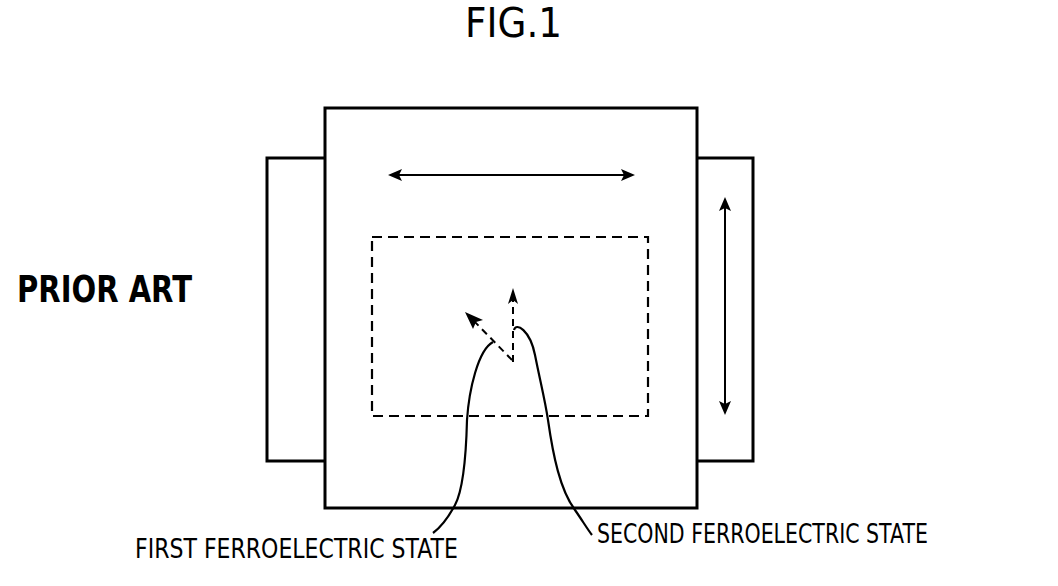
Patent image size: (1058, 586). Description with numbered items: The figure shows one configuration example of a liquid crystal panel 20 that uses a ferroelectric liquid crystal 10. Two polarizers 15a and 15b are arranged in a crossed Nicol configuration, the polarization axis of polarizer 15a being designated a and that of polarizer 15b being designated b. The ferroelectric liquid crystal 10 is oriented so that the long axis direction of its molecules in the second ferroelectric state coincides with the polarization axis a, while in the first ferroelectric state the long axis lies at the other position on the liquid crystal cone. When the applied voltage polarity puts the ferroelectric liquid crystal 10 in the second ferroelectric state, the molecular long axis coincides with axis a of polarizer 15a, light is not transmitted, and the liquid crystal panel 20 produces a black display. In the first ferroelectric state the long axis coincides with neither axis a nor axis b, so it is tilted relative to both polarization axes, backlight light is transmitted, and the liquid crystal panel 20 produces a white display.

The ferroelectric liquid crystal 10 is at (403, 422).
The polarizer 15a is at (712, 93).
The polarizer 15b is at (607, 108).
The liquid crystal panel 20 is at (549, 284).
The polarization axis a is at (727, 285).
The polarization axis b is at (510, 175).